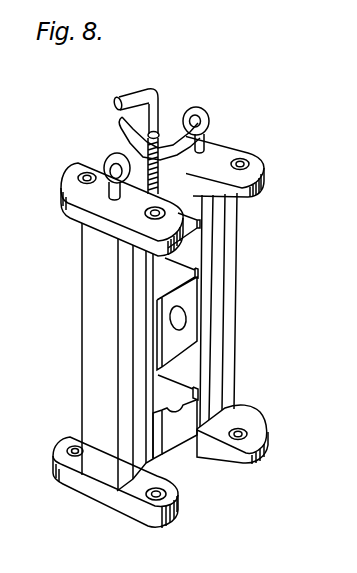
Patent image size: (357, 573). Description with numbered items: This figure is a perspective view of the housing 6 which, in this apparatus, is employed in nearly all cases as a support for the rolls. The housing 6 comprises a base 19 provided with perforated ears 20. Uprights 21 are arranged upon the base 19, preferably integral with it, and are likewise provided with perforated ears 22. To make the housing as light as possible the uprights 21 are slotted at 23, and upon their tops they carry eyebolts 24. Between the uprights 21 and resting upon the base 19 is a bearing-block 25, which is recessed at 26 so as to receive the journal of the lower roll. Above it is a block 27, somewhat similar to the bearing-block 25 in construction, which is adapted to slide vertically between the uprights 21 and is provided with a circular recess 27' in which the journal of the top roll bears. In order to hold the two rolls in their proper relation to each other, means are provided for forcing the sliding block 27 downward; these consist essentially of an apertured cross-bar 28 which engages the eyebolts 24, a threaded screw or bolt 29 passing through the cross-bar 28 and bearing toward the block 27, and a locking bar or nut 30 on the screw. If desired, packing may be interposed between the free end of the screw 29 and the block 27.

The housing 6 is at (88, 356).
The base 19 is at (172, 468).
The perforated ears 20 is at (152, 516).
The uprights 21 is at (227, 368).
The perforated ears 22 is at (264, 177).
The slots 23 is at (140, 398).
The eyebolts 24 is at (205, 112).
The bearing-block 25 is at (172, 435).
The recess 26 is at (182, 410).
The block 27 is at (214, 302).
The circular recess 27' is at (225, 318).
The apertured cross-bar 28 is at (177, 110).
The threaded screw or bolt 29 is at (137, 97).
The locking bar or nut 30 is at (130, 125).